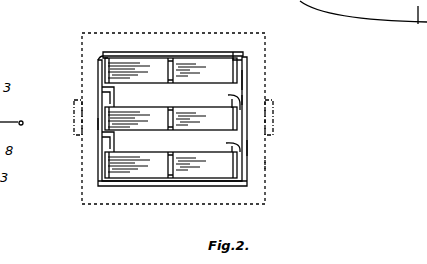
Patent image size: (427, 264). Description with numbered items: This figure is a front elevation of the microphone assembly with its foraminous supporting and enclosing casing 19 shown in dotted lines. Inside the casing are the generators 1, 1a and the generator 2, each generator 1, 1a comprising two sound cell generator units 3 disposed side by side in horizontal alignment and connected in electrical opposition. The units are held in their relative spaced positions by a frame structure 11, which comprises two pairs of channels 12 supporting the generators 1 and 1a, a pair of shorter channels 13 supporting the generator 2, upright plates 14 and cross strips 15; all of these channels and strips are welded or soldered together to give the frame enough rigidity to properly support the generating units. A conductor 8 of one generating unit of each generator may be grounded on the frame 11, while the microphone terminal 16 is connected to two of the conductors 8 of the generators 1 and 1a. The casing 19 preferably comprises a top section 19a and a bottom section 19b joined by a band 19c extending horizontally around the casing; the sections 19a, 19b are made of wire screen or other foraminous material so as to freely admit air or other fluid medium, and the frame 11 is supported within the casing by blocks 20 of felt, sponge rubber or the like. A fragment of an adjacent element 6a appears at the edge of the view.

The generator 1 is at (248, 57).
The generator 1a is at (250, 148).
The generator 2 is at (250, 99).
The sound cell generator unit 3 is at (125, 65).
The housing portion 6a is at (291, 5).
The conductor 8 is at (173, 58).
The frame structure 11 is at (97, 61).
The channel 12 is at (105, 78).
The shorter channel 13 is at (100, 123).
The upright plate 14 is at (252, 80).
The cross strip 15 is at (148, 53).
The terminal 16 is at (23, 121).
The casing 19 is at (270, 163).
The top section 19a is at (224, 40).
The bottom section 19b is at (181, 206).
The band 19c is at (305, 114).
The block 20 is at (129, 38).